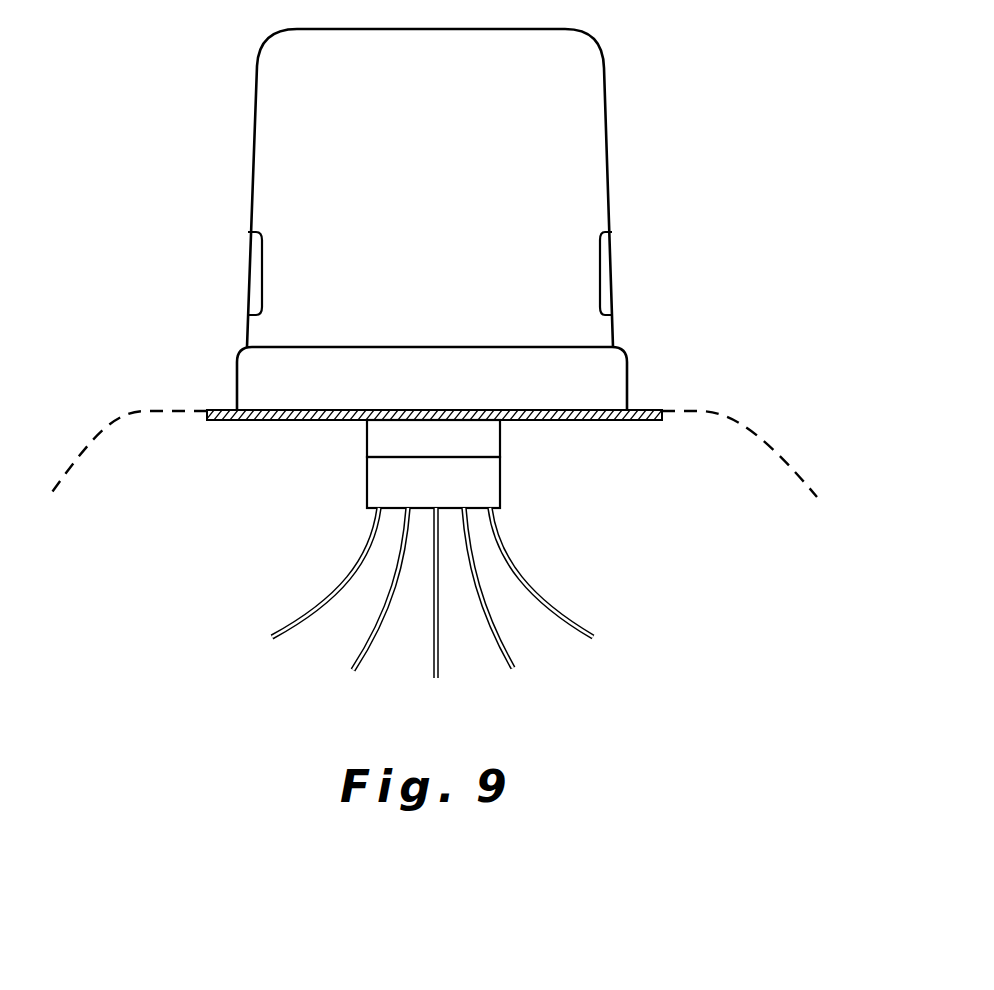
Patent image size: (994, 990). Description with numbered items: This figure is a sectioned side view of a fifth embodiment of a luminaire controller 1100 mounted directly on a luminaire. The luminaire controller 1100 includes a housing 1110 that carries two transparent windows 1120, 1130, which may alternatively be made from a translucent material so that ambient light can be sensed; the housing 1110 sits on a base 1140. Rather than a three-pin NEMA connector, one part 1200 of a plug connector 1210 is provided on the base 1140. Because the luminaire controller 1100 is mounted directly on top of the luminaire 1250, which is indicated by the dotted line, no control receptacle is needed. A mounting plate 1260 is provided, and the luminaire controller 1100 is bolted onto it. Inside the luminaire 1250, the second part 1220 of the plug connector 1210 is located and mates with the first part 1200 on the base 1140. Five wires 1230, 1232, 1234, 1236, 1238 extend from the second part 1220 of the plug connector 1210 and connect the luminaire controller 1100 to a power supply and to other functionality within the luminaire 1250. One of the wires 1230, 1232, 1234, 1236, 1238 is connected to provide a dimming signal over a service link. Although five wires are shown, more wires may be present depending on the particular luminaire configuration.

The luminaire controller 1100 is at (452, 219).
The housing 1110 is at (460, 212).
The transparent window 1120 is at (253, 278).
The transparent window 1130 is at (608, 278).
The base 1140 is at (612, 380).
The first part of plug connector 1200 is at (407, 451).
The plug connector 1210 is at (484, 464).
The second part of plug connector 1220 is at (433, 482).
The wire 1230 is at (272, 637).
The wire 1232 is at (353, 670).
The wire 1234 is at (436, 678).
The wire 1236 is at (513, 668).
The wire 1238 is at (593, 637).
The luminaire 1250 is at (773, 474).
The mounting plate 1260 is at (230, 415).